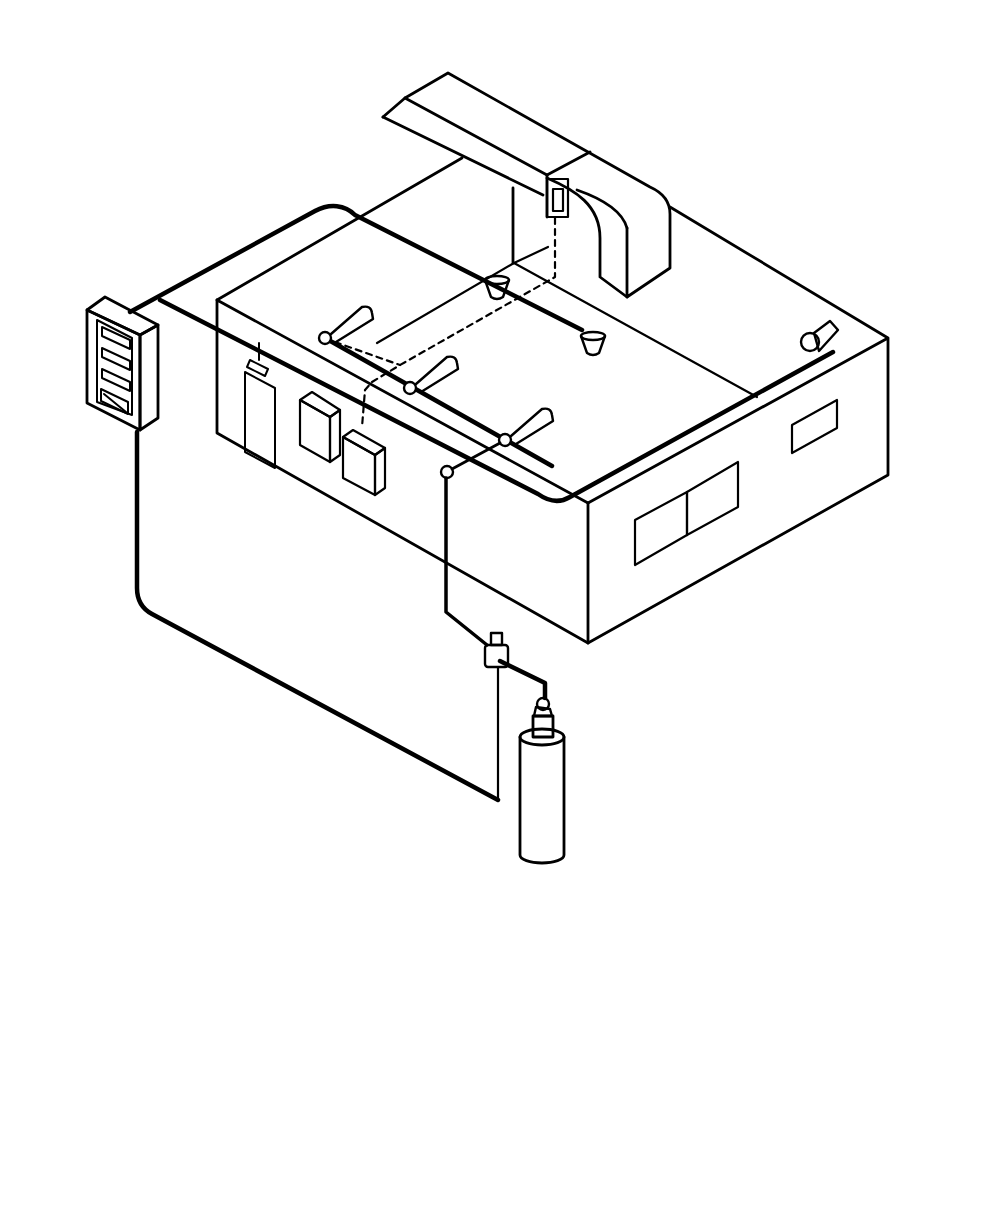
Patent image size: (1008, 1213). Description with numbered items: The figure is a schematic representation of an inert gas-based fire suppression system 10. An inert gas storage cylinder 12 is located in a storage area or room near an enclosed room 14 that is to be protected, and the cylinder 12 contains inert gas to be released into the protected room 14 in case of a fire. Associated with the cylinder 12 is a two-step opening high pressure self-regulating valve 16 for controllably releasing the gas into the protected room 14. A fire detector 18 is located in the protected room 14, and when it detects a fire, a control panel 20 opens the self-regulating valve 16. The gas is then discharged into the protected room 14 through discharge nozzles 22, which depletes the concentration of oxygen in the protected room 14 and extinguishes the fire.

The inert gas-based fire suppression system 10 is at (663, 106).
The inert gas storage cylinder 12 is at (520, 863).
The enclosed room 14 is at (742, 278).
The two-step opening high pressure self-regulating valve 16 is at (533, 707).
The fire detector 18 is at (543, 202).
The control panel 20 is at (87, 413).
The discharge nozzles 22 is at (455, 368).